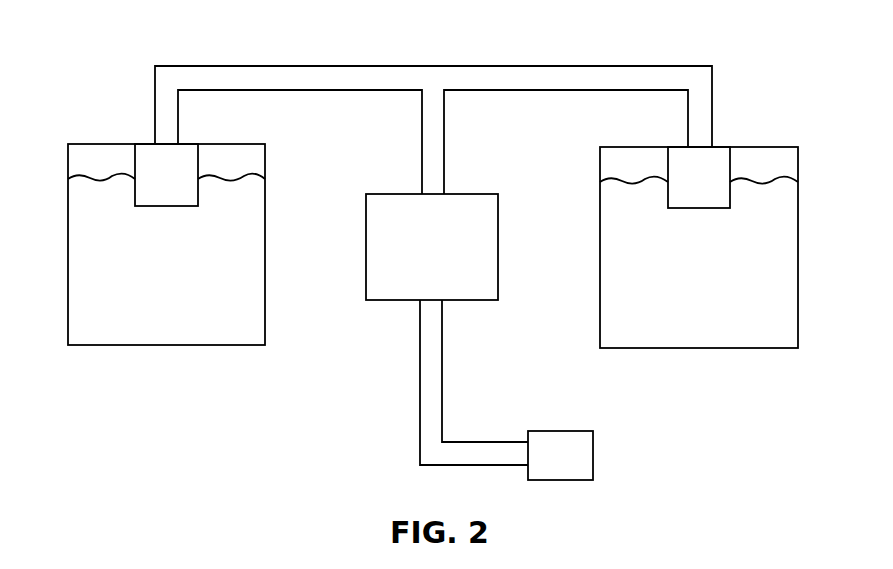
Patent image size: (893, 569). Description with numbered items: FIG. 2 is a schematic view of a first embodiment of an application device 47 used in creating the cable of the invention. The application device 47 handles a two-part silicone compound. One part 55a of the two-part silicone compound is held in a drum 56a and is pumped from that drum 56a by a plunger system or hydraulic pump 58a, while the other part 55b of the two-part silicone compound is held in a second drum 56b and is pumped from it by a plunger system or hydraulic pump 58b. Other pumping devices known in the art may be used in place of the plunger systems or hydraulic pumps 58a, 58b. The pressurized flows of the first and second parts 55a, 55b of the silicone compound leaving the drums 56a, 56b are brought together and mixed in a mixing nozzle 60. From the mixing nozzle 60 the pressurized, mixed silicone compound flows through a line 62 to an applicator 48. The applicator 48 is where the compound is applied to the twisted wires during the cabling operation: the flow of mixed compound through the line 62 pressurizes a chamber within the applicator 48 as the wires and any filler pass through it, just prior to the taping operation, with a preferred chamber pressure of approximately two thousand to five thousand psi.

The application device 47 is at (88, 56).
The first part of two-part silicone compound 55a is at (188, 258).
The second part of two-part silicone compound 55b is at (721, 260).
The drum 56a is at (134, 347).
The drum 56b is at (730, 349).
The plunger system or hydraulic pump 58a is at (145, 143).
The plunger system or hydraulic pump 58b is at (722, 146).
The mixing nozzle 60 is at (395, 193).
The line 62 is at (443, 378).
The applicator 48 is at (562, 430).